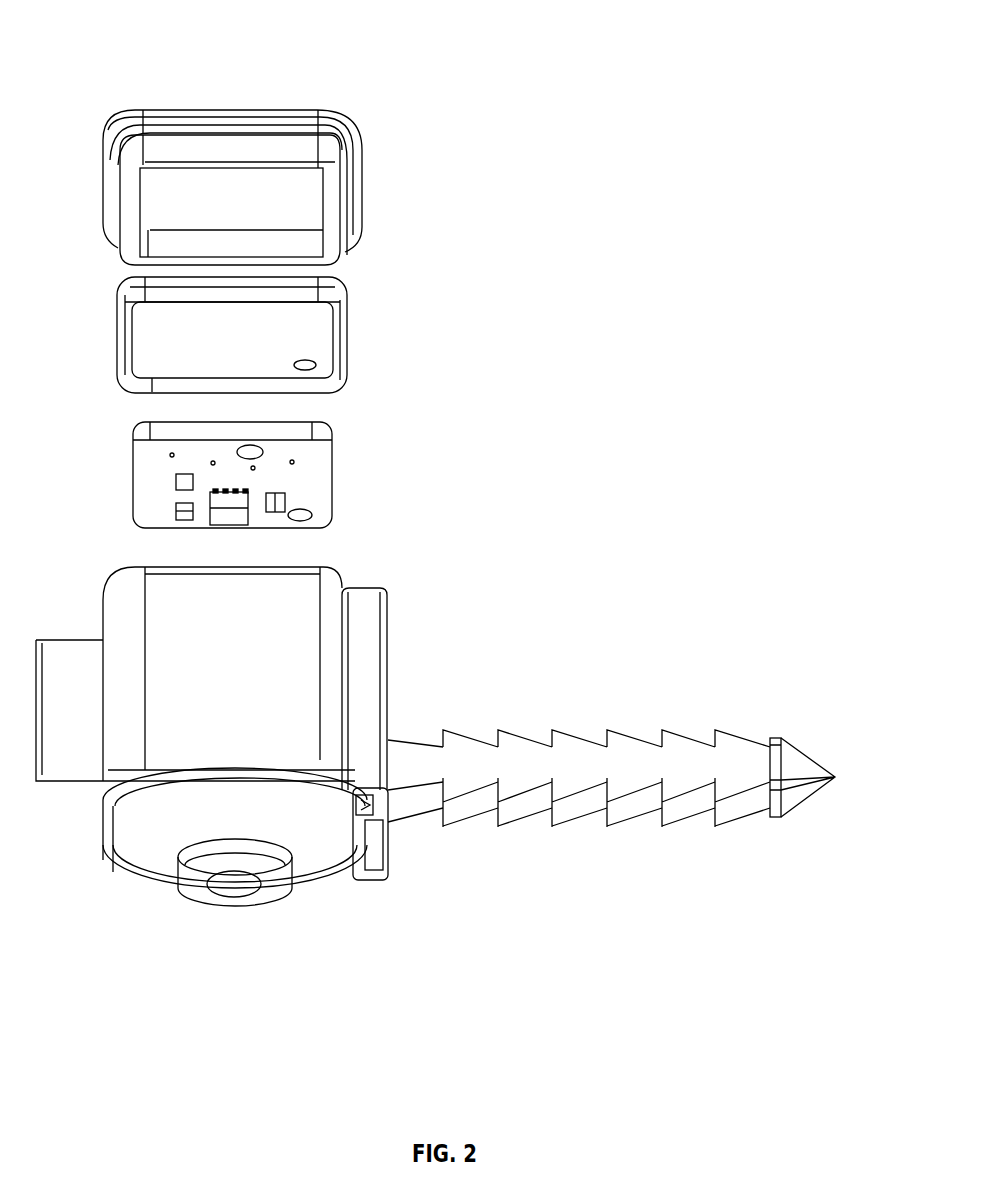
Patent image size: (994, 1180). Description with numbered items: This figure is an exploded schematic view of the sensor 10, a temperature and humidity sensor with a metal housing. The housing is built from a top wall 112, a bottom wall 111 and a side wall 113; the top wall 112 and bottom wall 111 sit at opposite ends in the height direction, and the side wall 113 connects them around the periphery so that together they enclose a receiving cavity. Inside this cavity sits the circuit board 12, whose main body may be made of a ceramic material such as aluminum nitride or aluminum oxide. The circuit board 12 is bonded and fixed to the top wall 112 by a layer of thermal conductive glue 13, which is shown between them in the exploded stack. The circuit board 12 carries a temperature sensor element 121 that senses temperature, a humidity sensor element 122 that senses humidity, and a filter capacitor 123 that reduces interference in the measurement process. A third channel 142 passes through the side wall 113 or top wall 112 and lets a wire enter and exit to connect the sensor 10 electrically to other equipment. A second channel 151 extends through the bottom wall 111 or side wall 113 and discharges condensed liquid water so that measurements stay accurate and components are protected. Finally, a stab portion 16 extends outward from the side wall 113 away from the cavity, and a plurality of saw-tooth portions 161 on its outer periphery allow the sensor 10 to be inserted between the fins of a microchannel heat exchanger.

The sensor 10 is at (183, 58).
The top wall 112 is at (327, 112).
The thermal conductive glue 13 is at (250, 330).
The circuit board 12 is at (366, 461).
The humidity sensor element 122 is at (197, 477).
The temperature sensor element 121 is at (265, 495).
The filter capacitor 123 is at (312, 514).
The side wall 113 is at (305, 686).
The bottom wall 111 is at (350, 880).
The third channel 142 is at (47, 782).
The second channel 151 is at (228, 880).
The stab portion 16 is at (611, 834).
The saw-tooth portions 161 is at (512, 802).